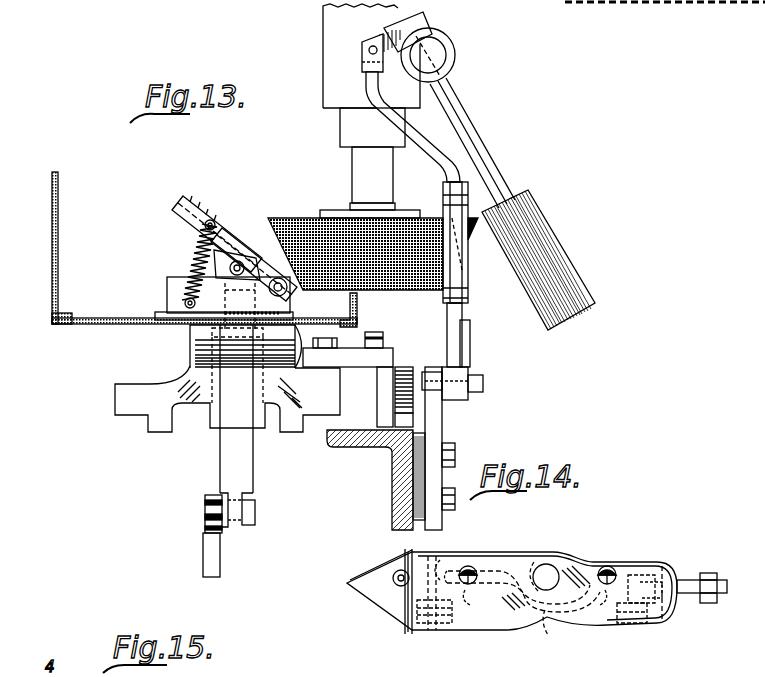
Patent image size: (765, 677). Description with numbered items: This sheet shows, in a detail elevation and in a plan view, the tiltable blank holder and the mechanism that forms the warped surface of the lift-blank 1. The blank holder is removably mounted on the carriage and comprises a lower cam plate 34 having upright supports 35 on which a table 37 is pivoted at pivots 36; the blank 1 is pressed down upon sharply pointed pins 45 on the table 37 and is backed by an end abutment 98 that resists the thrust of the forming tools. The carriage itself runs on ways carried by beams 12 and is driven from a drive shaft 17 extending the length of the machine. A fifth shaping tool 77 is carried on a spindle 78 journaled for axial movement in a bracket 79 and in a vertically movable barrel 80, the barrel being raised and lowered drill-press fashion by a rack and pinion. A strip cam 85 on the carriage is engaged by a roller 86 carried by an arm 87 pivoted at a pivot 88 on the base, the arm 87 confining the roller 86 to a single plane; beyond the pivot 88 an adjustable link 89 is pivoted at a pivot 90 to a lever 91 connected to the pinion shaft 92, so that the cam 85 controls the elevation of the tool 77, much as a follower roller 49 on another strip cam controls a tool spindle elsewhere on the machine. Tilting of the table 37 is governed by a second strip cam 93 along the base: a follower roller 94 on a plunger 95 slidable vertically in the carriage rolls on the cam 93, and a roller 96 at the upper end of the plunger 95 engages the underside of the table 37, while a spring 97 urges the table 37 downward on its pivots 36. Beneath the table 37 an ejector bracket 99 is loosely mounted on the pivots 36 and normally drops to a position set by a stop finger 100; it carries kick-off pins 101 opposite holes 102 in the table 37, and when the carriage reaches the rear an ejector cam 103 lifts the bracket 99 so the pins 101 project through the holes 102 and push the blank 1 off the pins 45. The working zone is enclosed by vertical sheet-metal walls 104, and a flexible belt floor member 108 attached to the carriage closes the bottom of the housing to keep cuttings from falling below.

In FIG. 13, the blank 1 is at (200, 203).
In FIG. 13, the beams 12 is at (392, 480).
In FIG. 13, the drive shaft 17 is at (198, 333).
In FIG. 14, the lower cam plate 34 is at (378, 600).
In FIG. 13, the upright supports 35 is at (168, 282).
In FIG. 14, the upright supports 35 is at (430, 554).
In FIG. 13, the pivots 36 is at (286, 291).
In FIG. 14, the pivots 36 is at (450, 620).
In FIG. 13, the table 37 is at (156, 316).
In FIG. 14, the table 37 is at (525, 563).
In FIG. 14, the pins 45 is at (470, 592).
In FIG. 13, the follower roller 49 is at (415, 322).
In FIG. 13, the fifth shaping tool 77 is at (300, 228).
In FIG. 13, the spindle 78 is at (362, 176).
In FIG. 13, the bracket 79 is at (332, 72).
In FIG. 13, the barrel 80 is at (348, 128).
In FIG. 13, the strip cam 85 is at (400, 420).
In FIG. 13, the roller 86 is at (400, 380).
In FIG. 13, the arm 87 is at (452, 370).
In FIG. 13, the pivot 88 is at (432, 372).
In FIG. 13, the adjustable link 89 is at (462, 268).
In FIG. 13, the pivot 90 is at (362, 50).
In FIG. 13, the lever 91 is at (394, 28).
In FIG. 13, the pinion shaft 92 is at (446, 55).
In FIG. 13, the strip cam 93 is at (218, 565).
In FIG. 13, the follower roller 94 is at (212, 512).
In FIG. 13, the plunger 95 is at (221, 466).
In FIG. 13, the roller 96 is at (258, 240).
In FIG. 13, the spring 97 is at (198, 254).
In FIG. 14, the spring 97 is at (399, 571).
In FIG. 13, the end abutment 98 is at (216, 227).
In FIG. 14, the end abutment 98 is at (408, 620).
In FIG. 13, the ejector bracket 99 is at (248, 252).
In FIG. 14, the ejector bracket 99 is at (546, 636).
In FIG. 13, the stop finger 100 is at (196, 302).
In FIG. 14, the stop finger 100 is at (448, 562).
In FIG. 14, the kick-off pins 101 is at (490, 584).
In FIG. 14, the holes 102 is at (470, 566).
In FIG. 14, the ejector cam 103 is at (700, 580).
In FIG. 13, the vertical walls 104 is at (58, 204).
In FIG. 13, the flexible closure or floor member 108 is at (107, 318).